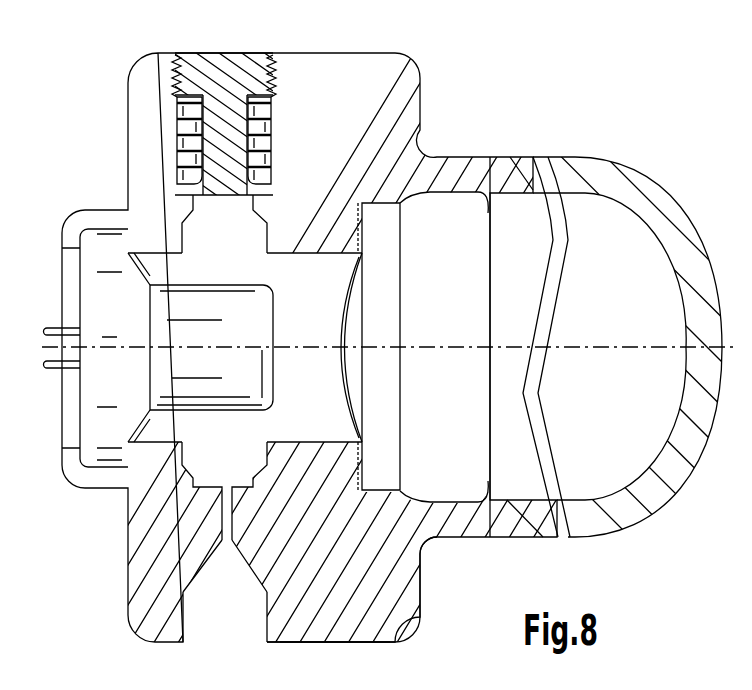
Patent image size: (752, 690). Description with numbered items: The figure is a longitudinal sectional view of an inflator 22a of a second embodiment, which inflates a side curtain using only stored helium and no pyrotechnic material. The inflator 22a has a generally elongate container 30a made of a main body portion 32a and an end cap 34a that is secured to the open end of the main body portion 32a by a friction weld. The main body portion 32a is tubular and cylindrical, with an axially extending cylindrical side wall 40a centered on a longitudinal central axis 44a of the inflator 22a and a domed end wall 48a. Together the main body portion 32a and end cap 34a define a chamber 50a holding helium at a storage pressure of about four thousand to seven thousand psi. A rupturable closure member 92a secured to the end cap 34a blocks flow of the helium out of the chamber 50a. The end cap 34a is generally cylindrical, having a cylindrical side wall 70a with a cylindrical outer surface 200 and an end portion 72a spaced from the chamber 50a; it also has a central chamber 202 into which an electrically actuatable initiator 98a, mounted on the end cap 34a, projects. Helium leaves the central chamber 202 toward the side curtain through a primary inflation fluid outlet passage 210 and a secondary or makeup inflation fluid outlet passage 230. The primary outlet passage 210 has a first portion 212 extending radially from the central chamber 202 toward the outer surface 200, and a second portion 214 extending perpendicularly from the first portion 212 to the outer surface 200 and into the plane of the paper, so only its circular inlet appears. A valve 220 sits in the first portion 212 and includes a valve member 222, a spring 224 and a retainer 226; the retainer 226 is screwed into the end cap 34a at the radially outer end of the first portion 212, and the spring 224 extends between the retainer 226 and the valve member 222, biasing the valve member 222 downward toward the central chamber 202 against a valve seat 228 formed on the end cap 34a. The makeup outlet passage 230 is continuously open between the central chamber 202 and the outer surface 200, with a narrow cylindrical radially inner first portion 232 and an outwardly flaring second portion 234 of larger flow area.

The inflator 22a is at (651, 123).
The container 30a is at (576, 137).
The chamber 50a is at (625, 266).
The longitudinal central axis 44a is at (577, 343).
The domed end wall 48a is at (697, 393).
The cylindrical side wall 40a is at (516, 510).
The main body portion 32a is at (638, 532).
The end cap 34a is at (422, 575).
The cylindrical side wall 70a is at (362, 599).
The cylindrical outer surface 200 is at (358, 644).
The second portion 234 is at (200, 613).
The makeup inflation fluid outlet passage 230 is at (193, 578).
The end portion 72a is at (128, 555).
The first portion 232 is at (227, 507).
The electrically actuatable initiator 98a is at (78, 392).
The central chamber 202 is at (324, 418).
The rupturable closure member 92a is at (341, 318).
The primary inflation fluid outlet passage 210 is at (170, 193).
The first portion 212 is at (177, 157).
The valve member 222 is at (223, 148).
The valve 220 is at (190, 137).
The spring 224 is at (170, 117).
The retainer 226 is at (183, 67).
The second portion 214 is at (264, 92).
The valve seat 228 is at (270, 187).